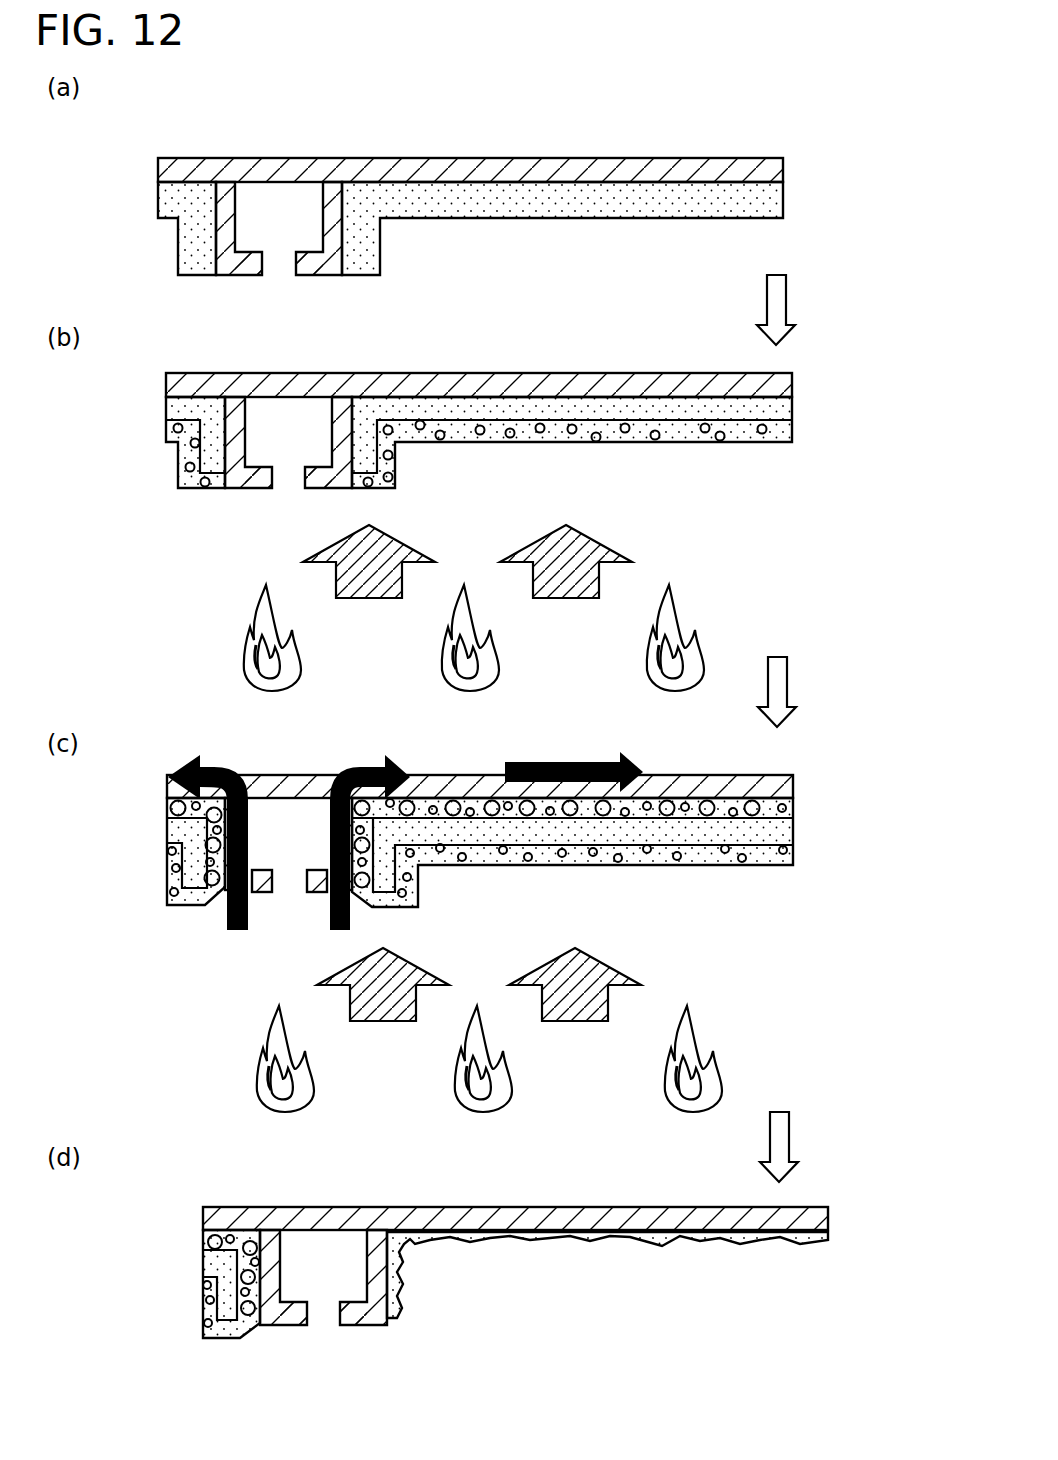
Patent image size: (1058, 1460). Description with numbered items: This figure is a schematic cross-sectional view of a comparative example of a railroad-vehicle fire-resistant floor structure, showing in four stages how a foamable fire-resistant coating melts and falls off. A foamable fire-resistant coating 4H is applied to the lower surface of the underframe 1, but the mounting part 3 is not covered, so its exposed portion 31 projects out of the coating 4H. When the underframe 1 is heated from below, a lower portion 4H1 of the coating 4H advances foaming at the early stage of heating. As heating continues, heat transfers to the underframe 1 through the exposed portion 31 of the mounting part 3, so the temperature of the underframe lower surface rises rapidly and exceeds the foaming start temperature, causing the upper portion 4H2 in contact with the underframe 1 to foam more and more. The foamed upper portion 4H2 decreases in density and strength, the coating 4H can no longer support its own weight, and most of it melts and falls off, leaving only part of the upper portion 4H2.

The underframe 1 is at (522, 158).
The mounting part 3 is at (242, 272).
The exposed portion 31 is at (314, 275).
The foamable fire-resistant coating 4H is at (187, 246).
The lower portion of the foamable fire-resistant coating 4H1 is at (556, 432).
The upper portion of the foamable fire-resistant coating 4H2 is at (692, 805).